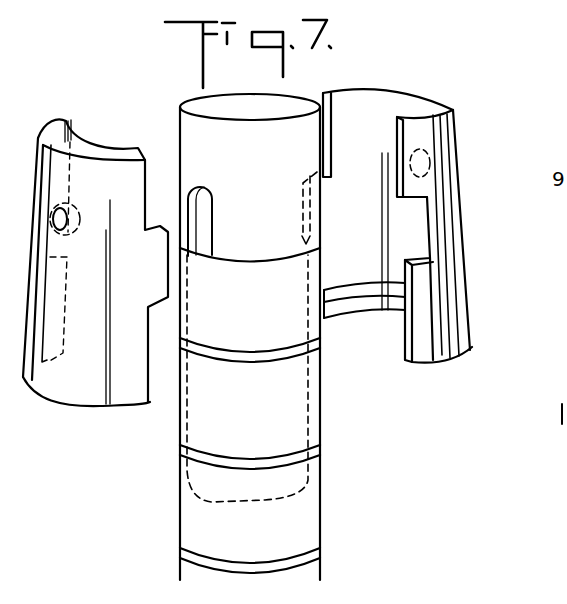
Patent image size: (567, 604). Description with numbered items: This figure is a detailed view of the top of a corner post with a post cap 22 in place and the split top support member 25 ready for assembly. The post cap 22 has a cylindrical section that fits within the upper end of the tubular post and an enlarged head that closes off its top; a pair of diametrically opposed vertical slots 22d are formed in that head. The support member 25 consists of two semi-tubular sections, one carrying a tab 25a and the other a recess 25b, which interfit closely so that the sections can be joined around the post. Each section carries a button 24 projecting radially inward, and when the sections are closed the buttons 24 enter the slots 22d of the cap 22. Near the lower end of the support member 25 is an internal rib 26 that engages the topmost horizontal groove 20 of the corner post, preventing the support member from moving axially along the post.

The horizontal recess 20 is at (317, 345).
The post cap 22 is at (190, 91).
The vertical slot 22d is at (209, 223).
The button 24 is at (72, 205).
The top support member 25 is at (468, 42).
The tab 25a is at (163, 224).
The recess 25b is at (427, 241).
The rib 26 is at (343, 283).